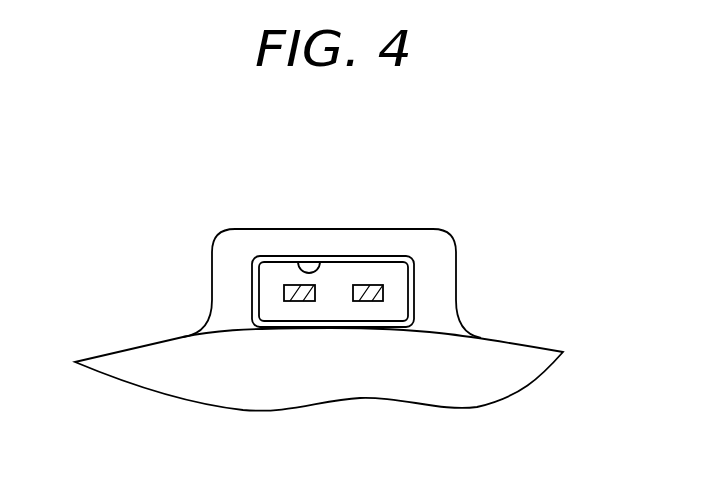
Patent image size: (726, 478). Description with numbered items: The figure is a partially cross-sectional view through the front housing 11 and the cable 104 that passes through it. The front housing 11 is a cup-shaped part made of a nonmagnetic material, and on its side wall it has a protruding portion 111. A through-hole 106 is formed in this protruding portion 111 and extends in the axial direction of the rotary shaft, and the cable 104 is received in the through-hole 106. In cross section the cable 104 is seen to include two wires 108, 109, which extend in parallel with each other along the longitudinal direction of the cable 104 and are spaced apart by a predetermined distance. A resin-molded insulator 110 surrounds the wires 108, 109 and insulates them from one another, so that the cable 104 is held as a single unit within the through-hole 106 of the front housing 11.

The front housing 11 is at (505, 367).
The cable 104 is at (383, 257).
The through-hole 106 is at (320, 262).
The wire 108 is at (383, 290).
The wire 109 is at (284, 293).
The resin-molded insulator 110 is at (340, 278).
The protruding portion 111 is at (252, 243).